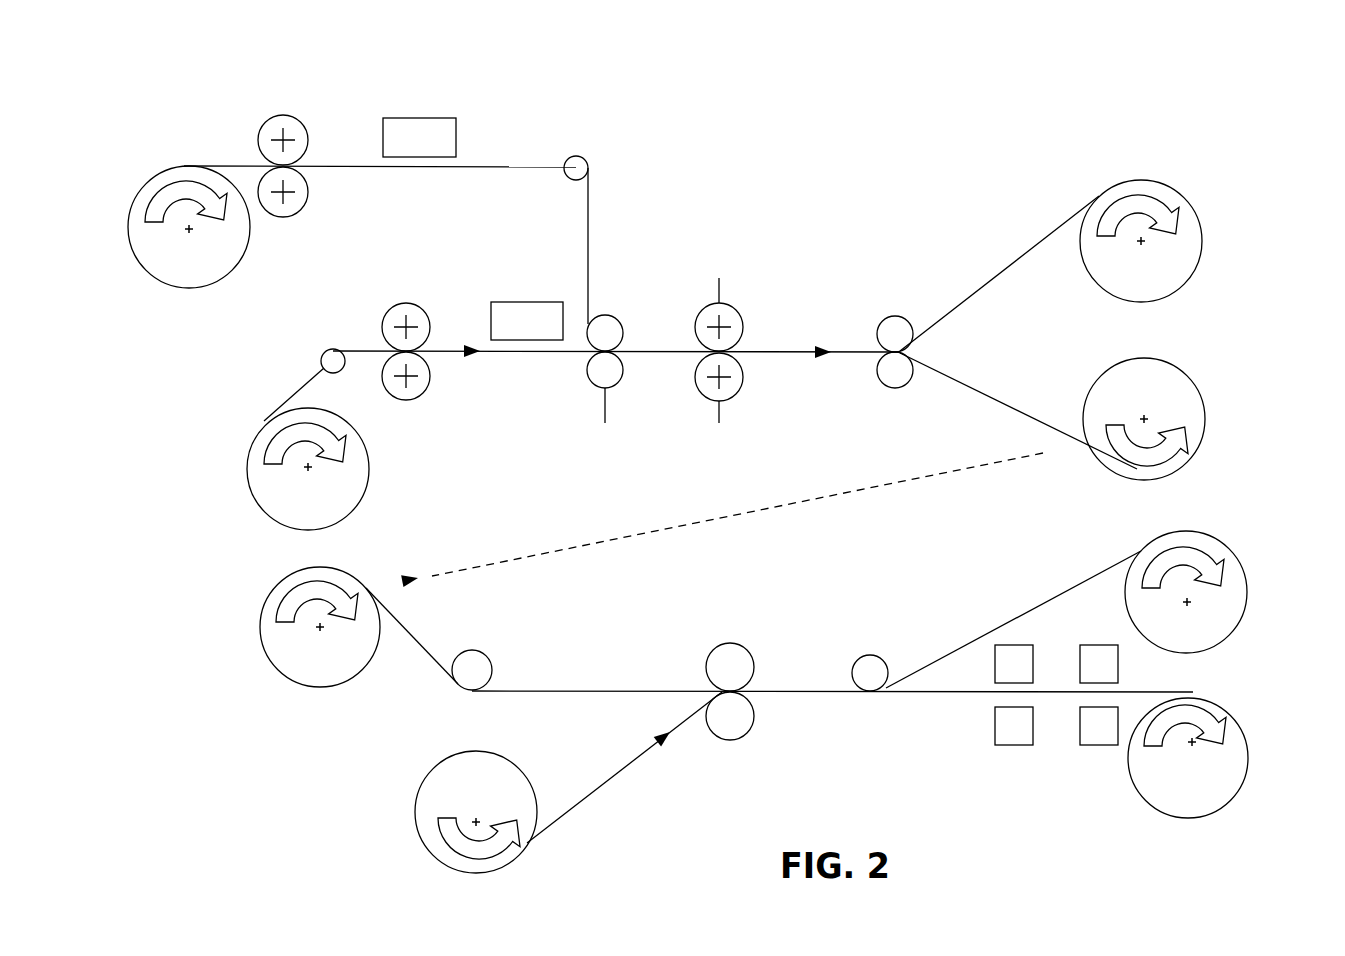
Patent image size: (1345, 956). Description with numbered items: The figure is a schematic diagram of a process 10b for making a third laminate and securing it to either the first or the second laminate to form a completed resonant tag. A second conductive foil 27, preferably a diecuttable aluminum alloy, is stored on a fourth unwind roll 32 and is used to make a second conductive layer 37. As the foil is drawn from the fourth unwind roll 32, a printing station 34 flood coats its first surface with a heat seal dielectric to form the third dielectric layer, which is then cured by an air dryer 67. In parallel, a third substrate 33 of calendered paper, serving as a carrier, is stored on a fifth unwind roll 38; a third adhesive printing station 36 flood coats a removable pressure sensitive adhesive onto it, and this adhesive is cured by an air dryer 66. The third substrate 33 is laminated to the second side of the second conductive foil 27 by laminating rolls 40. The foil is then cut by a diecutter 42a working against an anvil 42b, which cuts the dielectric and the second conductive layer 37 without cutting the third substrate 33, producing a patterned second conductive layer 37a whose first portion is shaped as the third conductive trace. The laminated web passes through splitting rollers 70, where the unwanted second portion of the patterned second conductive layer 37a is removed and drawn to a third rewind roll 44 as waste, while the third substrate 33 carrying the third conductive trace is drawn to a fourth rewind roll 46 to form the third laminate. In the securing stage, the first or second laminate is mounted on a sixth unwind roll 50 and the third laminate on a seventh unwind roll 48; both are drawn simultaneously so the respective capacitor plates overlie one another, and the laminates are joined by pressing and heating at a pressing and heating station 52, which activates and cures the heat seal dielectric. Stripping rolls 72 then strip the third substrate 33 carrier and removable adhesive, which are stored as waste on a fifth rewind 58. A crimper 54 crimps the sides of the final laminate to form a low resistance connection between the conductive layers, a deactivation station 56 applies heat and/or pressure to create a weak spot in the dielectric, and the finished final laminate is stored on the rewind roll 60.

The process 10b is at (850, 178).
The second conductive foil 27 is at (237, 165).
The fourth unwind roll 32 is at (142, 265).
The third substrate 33 is at (297, 385).
The printing station 34 is at (285, 215).
The third adhesive printing station 36 is at (430, 385).
The second conductive layer 37 is at (322, 167).
The patterned second conductive layer 37a is at (768, 352).
The fifth unwind roll 38 is at (372, 470).
The laminating rolls 40 is at (599, 389).
The diecutter 42a is at (720, 301).
The anvil 42b is at (721, 403).
The third rewind roll 44 is at (1202, 241).
The fourth rewind roll 46 is at (1204, 419).
The seventh unwind roll 48 is at (282, 677).
The sixth unwind roll 50 is at (427, 848).
The pressing and heating station 52 is at (728, 642).
The crimper 54 is at (995, 718).
The deactivation station 56 is at (1080, 743).
The fifth rewind 58 is at (1247, 588).
The rewind roll 60 is at (1248, 772).
The air dryer 66 is at (538, 302).
The air dryer 67 is at (420, 118).
The splitting rollers 70 is at (888, 315).
The stripping rolls 72 is at (877, 652).